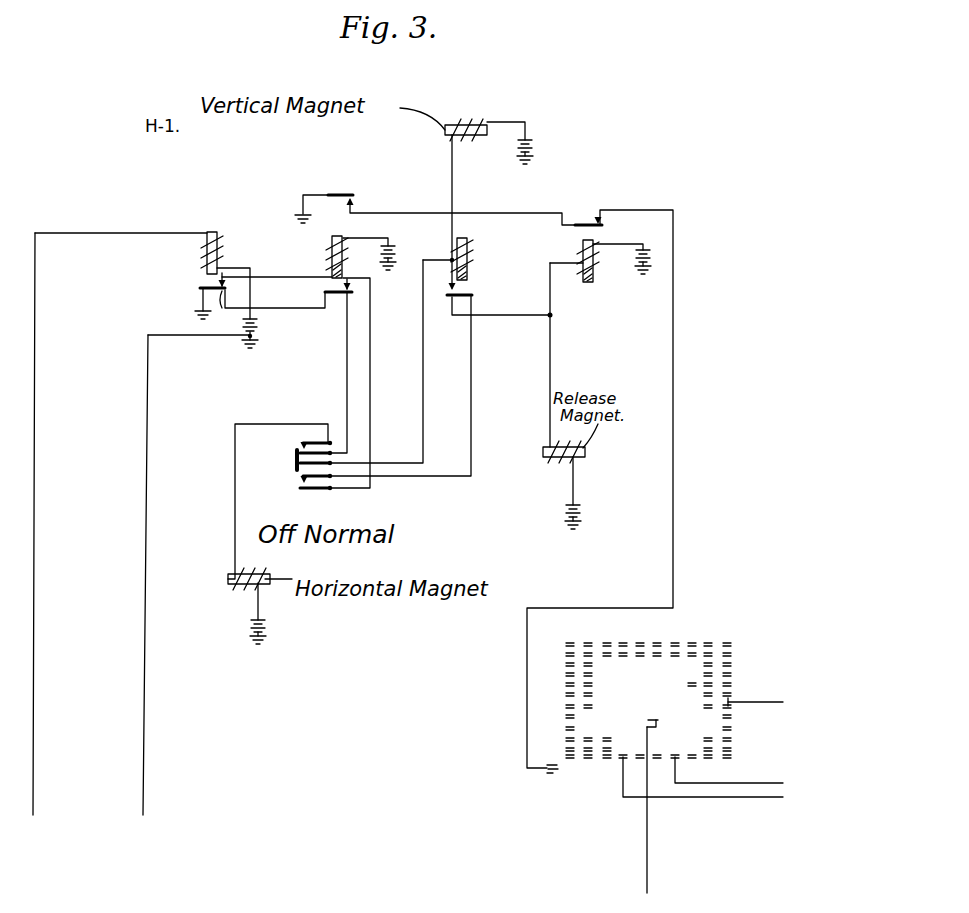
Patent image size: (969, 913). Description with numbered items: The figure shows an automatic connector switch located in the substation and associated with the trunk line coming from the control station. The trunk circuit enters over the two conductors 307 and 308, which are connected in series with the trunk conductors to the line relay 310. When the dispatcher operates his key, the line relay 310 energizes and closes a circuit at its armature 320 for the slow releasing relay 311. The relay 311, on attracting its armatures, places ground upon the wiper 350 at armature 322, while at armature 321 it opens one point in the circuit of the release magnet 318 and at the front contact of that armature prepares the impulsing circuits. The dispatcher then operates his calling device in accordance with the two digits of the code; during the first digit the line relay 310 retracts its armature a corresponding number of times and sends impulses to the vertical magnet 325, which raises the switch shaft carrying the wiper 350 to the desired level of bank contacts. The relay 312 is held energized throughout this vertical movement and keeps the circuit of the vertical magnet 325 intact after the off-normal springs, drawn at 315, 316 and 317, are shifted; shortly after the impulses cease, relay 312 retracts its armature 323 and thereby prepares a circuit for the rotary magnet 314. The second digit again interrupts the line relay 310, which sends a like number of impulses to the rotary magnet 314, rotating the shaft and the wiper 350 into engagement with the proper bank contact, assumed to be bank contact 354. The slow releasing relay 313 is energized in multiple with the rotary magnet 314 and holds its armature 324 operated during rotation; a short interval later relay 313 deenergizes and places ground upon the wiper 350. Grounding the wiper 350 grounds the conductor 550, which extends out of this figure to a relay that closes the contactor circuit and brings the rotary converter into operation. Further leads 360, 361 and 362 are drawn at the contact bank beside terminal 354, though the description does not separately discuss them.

The conductor 307 is at (33, 755).
The conductor 308 is at (142, 752).
The line relay 310 is at (220, 252).
The slow releasing relay 311 is at (332, 245).
The slow releasing relay 312 is at (469, 251).
The slow releasing relay 313 is at (593, 272).
The rotary magnet 314 is at (556, 460).
The off normal contact spring 315 is at (306, 490).
The off normal contact spring 316 is at (297, 470).
The off normal contact spring 317 is at (325, 480).
The release magnet 318 is at (256, 578).
The armature 320 is at (222, 312).
The armature 321 is at (332, 297).
The armature 322 is at (344, 195).
The armature 323 is at (472, 298).
The armature 324 is at (588, 222).
The vertical magnet 325 is at (463, 128).
The switch wiper 350 is at (545, 771).
The bank contact 354 is at (652, 719).
The line conductor 360 is at (741, 706).
The line conductor 361 is at (735, 787).
The line conductor 362 is at (726, 797).
The conductor 550 is at (649, 857).